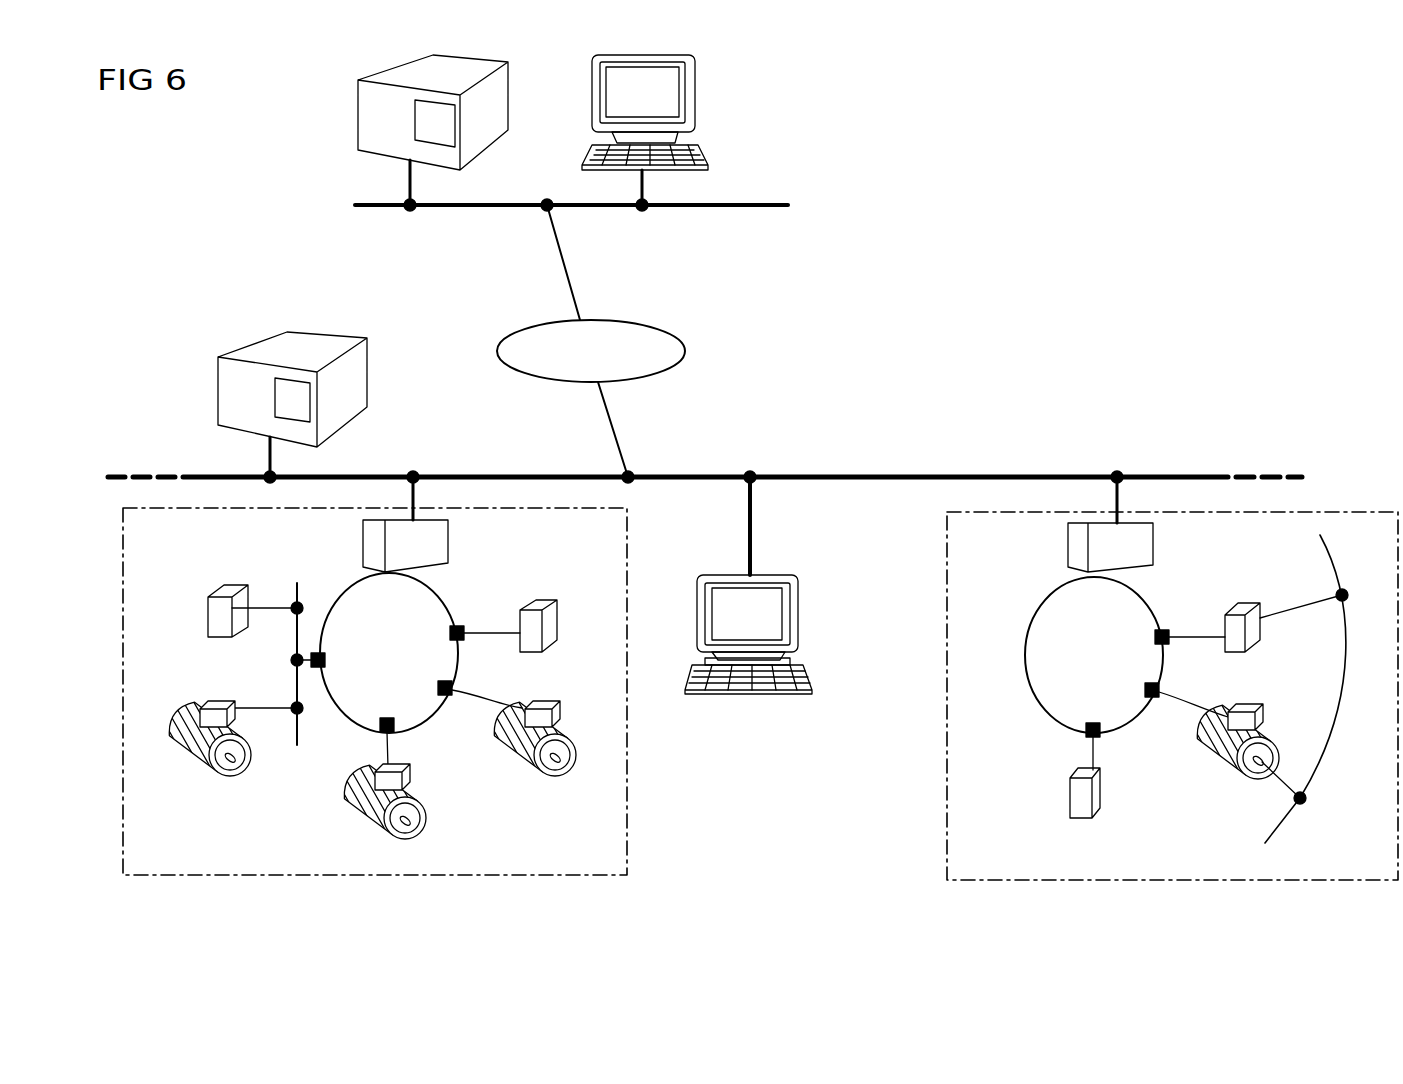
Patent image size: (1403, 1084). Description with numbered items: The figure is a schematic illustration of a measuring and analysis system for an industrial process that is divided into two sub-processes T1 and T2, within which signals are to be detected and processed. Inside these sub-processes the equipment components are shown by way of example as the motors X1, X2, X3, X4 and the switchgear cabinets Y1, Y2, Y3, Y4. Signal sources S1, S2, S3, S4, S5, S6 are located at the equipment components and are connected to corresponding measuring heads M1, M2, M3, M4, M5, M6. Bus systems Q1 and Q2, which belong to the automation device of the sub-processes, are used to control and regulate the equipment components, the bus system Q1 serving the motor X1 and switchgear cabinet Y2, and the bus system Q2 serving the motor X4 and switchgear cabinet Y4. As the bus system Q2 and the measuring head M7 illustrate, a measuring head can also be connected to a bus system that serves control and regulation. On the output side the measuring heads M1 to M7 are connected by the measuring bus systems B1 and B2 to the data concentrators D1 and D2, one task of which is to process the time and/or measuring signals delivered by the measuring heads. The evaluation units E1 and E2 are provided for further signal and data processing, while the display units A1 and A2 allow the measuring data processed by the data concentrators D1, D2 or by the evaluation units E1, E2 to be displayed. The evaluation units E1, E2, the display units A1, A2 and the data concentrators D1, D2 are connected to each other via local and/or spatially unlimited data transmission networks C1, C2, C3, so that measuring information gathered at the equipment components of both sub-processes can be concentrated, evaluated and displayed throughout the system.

The evaluation unit E1 is at (217, 395).
The evaluation unit E2 is at (357, 112).
The display unit A1 is at (798, 615).
The display unit A2 is at (695, 100).
The data transmission network C1 is at (872, 476).
The data transmission network C2 is at (685, 350).
The data transmission network C3 is at (733, 208).
The data concentrator D1 is at (448, 540).
The data concentrator D2 is at (1153, 543).
The measuring bus system B1 is at (1025, 637).
The measuring bus system B2 is at (457, 660).
The measuring head M1 is at (1100, 737).
The measuring head M2 is at (1145, 688).
The measuring head M3 is at (1155, 635).
The measuring head M4 is at (395, 733).
The measuring head M5 is at (440, 686).
The measuring head M6 is at (452, 630).
The measuring head M7 is at (318, 652).
The signal source S1 is at (1090, 750).
The signal source S2 is at (1192, 700).
The signal source S3 is at (1197, 633).
The signal source S4 is at (385, 745).
The signal source S5 is at (495, 705).
The signal source S6 is at (490, 628).
The switchgear cabinet Y1 is at (1068, 812).
The switchgear cabinet Y2 is at (1247, 604).
The switchgear cabinet Y3 is at (557, 618).
The switchgear cabinet Y4 is at (207, 615).
The motor X1 is at (1257, 780).
The motor X2 is at (550, 777).
The motor X3 is at (355, 795).
The motor X4 is at (238, 777).
The bus system Q1 is at (1343, 728).
The bus system Q2 is at (296, 686).
The sub-process T1 is at (207, 878).
The sub-process T2 is at (1030, 882).